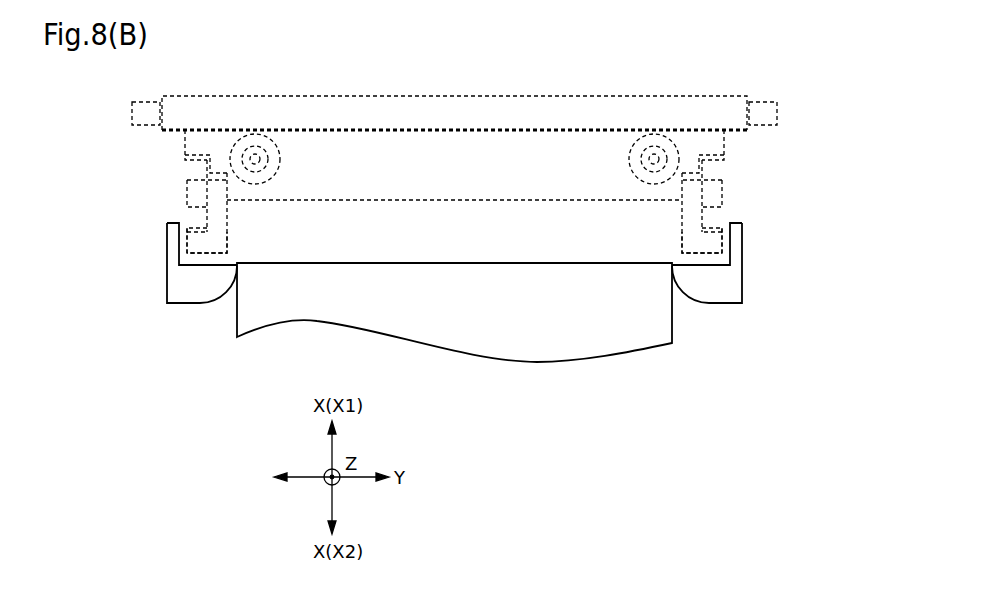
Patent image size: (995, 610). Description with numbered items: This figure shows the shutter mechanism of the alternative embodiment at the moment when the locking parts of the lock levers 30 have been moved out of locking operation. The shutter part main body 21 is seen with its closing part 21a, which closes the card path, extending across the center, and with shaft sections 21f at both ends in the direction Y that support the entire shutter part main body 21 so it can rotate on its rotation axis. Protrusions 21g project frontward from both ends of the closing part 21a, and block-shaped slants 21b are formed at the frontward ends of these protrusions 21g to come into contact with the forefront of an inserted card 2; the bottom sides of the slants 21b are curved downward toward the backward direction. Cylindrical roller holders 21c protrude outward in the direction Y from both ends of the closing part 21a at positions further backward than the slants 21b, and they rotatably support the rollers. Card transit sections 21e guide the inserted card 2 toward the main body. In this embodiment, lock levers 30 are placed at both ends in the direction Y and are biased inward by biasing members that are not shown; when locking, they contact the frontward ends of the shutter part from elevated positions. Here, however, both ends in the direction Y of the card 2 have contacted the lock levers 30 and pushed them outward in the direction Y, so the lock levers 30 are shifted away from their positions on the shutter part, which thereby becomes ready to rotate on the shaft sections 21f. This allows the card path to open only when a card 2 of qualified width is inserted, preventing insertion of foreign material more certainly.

The card 2 is at (672, 327).
The shutter part main body 21 is at (442, 94).
The closing part 21a is at (440, 201).
The slant 21b is at (187, 247).
The roller holder 21c is at (186, 191).
The card transit section 21e is at (184, 153).
The shaft section 21f is at (130, 113).
The protrusion 21g is at (229, 222).
The lock lever 30 is at (165, 292).